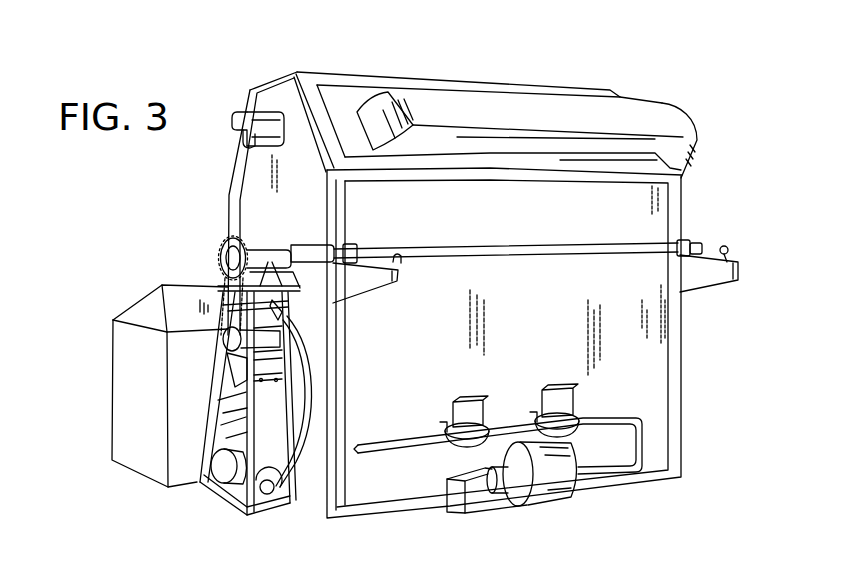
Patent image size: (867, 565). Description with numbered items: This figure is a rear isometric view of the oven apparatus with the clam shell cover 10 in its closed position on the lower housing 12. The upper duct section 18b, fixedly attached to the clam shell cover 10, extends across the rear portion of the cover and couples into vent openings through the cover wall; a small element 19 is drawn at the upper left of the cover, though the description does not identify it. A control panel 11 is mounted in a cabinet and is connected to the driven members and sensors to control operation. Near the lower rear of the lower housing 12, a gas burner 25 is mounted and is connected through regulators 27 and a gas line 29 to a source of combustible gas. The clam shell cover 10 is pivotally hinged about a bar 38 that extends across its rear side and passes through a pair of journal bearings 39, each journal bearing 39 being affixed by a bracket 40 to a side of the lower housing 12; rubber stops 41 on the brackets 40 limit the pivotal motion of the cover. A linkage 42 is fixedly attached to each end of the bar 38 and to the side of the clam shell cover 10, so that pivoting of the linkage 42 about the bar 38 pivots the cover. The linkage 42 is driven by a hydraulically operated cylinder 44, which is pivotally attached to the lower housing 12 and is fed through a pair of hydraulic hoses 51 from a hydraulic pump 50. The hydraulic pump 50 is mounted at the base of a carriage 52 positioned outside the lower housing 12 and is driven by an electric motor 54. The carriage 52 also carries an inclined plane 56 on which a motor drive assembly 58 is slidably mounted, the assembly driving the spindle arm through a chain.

The clam shell cover 10 is at (384, 74).
The control panel 11 is at (133, 300).
The lower housing 12 is at (702, 437).
The upper duct section 18b is at (650, 103).
The knob 19 is at (256, 114).
The gas burner 25 is at (553, 500).
The regulators 27 is at (467, 394).
The gas line 29 is at (392, 440).
The bar 38 is at (512, 244).
The journal bearings 39 is at (352, 244).
The bracket 40 is at (367, 295).
The rubber stops 41 is at (399, 254).
The linkage 42 is at (308, 245).
The hydraulically operated cylinder 44 is at (296, 276).
The hydraulic pump 50 is at (268, 500).
The hydraulic hoses 51 is at (303, 391).
The carriage 52 is at (190, 432).
The electric motor 54 is at (230, 493).
The inclined plane 56 is at (223, 377).
The motor drive assembly 58 is at (272, 367).